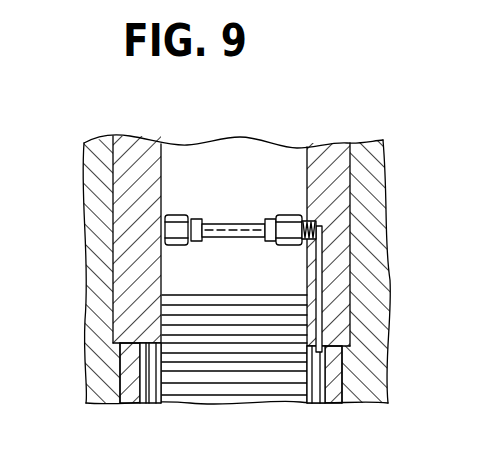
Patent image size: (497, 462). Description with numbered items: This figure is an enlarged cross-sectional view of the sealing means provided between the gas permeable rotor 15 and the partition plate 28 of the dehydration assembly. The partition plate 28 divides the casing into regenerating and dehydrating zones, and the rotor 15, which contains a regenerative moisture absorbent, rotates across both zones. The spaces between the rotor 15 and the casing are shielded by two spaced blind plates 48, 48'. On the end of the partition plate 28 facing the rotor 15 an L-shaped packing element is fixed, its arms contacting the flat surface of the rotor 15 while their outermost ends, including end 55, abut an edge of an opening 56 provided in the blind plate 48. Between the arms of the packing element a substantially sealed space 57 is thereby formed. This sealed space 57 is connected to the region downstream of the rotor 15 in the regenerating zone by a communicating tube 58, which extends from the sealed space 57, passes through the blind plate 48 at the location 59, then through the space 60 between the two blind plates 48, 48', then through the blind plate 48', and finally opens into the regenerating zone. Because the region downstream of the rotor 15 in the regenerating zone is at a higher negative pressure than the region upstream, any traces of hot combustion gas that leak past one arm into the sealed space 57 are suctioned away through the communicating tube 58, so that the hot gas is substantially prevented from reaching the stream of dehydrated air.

The gas permeable rotor 15 is at (237, 378).
The partition plate 28 is at (98, 247).
The blind plate 48 is at (328, 243).
The blind plate 48' is at (137, 243).
The outermost end of packing arm 55 is at (390, 0).
The opening in the blind plate 56 is at (332, 336).
The sealed space 57 is at (318, 378).
The communicating tube 58 is at (272, 232).
The passage of the communicating tube through the blind plate 59 is at (316, 273).
The space between blind plates 60 is at (250, 178).